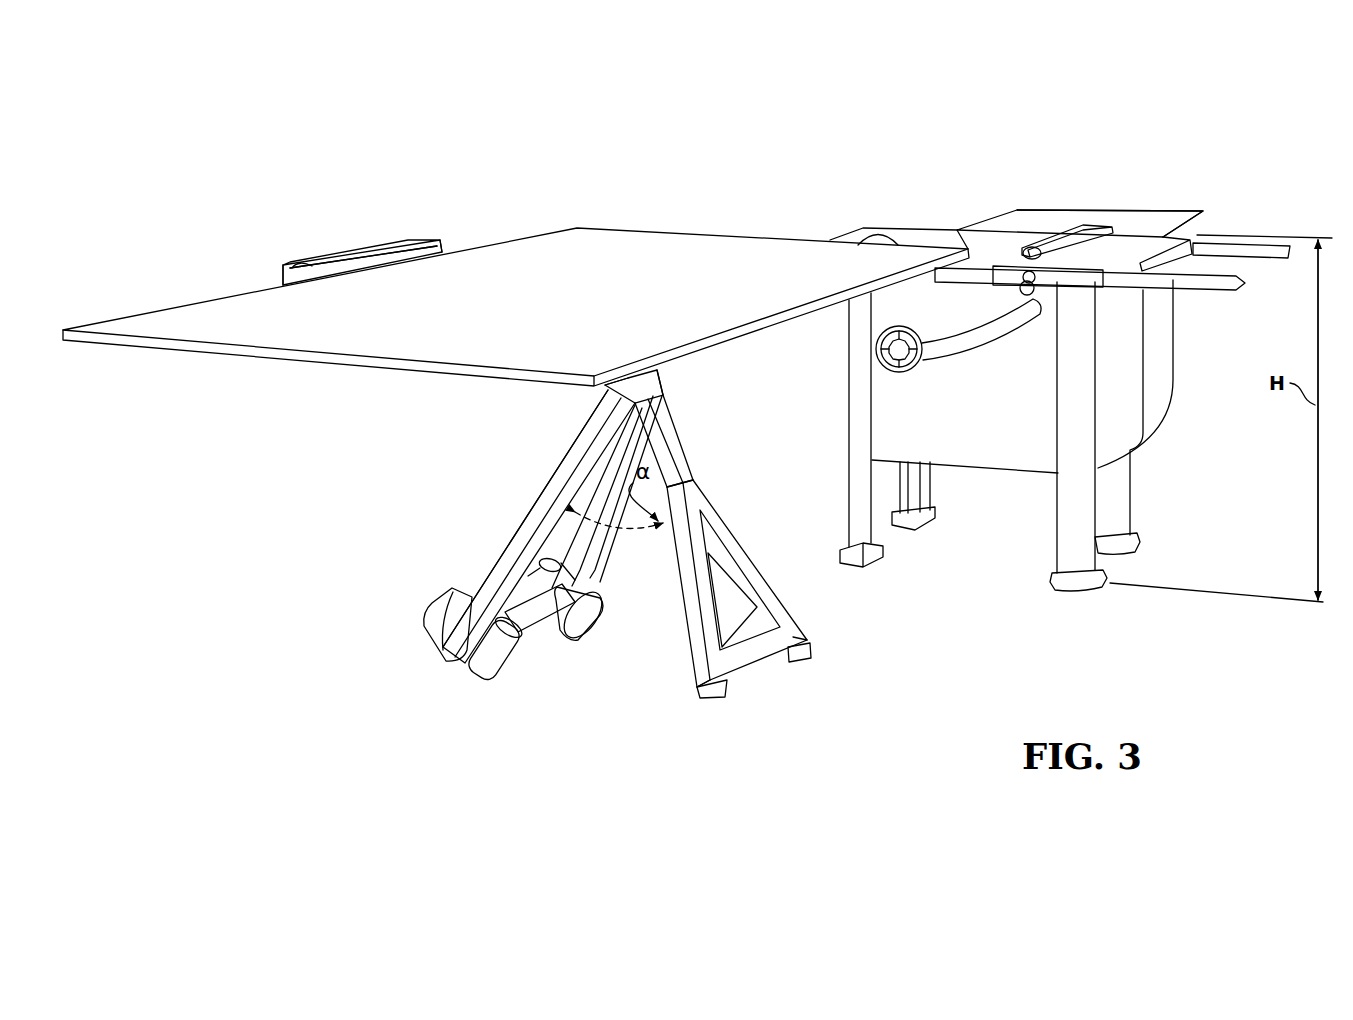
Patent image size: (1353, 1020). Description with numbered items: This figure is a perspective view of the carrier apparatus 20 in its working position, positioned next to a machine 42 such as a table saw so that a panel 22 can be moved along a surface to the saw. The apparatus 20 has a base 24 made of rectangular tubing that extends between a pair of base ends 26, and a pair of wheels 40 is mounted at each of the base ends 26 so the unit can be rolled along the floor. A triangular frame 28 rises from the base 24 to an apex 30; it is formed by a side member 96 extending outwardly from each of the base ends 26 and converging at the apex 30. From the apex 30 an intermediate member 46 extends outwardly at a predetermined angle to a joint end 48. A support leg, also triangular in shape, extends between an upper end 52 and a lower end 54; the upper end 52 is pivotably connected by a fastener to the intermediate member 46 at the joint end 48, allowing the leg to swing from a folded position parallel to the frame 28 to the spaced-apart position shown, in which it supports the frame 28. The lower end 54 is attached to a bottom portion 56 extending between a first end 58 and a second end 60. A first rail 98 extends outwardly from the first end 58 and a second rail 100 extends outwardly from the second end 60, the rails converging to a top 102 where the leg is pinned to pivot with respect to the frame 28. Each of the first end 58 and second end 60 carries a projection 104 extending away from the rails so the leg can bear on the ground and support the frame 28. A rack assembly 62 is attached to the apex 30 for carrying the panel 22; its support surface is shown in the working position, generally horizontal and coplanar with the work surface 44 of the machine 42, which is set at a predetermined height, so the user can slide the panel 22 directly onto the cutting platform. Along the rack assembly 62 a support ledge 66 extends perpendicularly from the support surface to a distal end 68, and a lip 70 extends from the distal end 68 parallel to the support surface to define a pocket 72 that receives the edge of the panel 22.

The carrier apparatus 20 is at (644, 210).
The panel 22 is at (135, 318).
The base 24 is at (535, 628).
The base ends 26 is at (533, 560).
The frame 28 is at (512, 505).
The apex 30 is at (616, 408).
The wheels 40 is at (430, 636).
The machine 42 is at (1230, 470).
The work surface 44 is at (993, 243).
The intermediate member 46 is at (643, 374).
The joint end 48 is at (687, 390).
The upper end 52 is at (662, 443).
The lower end 54 is at (688, 617).
The bottom portion 56 is at (747, 658).
The first end 58 is at (690, 667).
The second end 60 is at (794, 637).
The rack assembly 62 is at (330, 250).
The support ledge 66 is at (280, 280).
The distal end 68 is at (292, 262).
The lip 70 is at (424, 240).
The pocket 72 is at (372, 268).
The side member 96 is at (553, 470).
The first rail 98 is at (686, 600).
The second rail 100 is at (753, 572).
The top 102 is at (684, 480).
The projection 104 is at (715, 694).